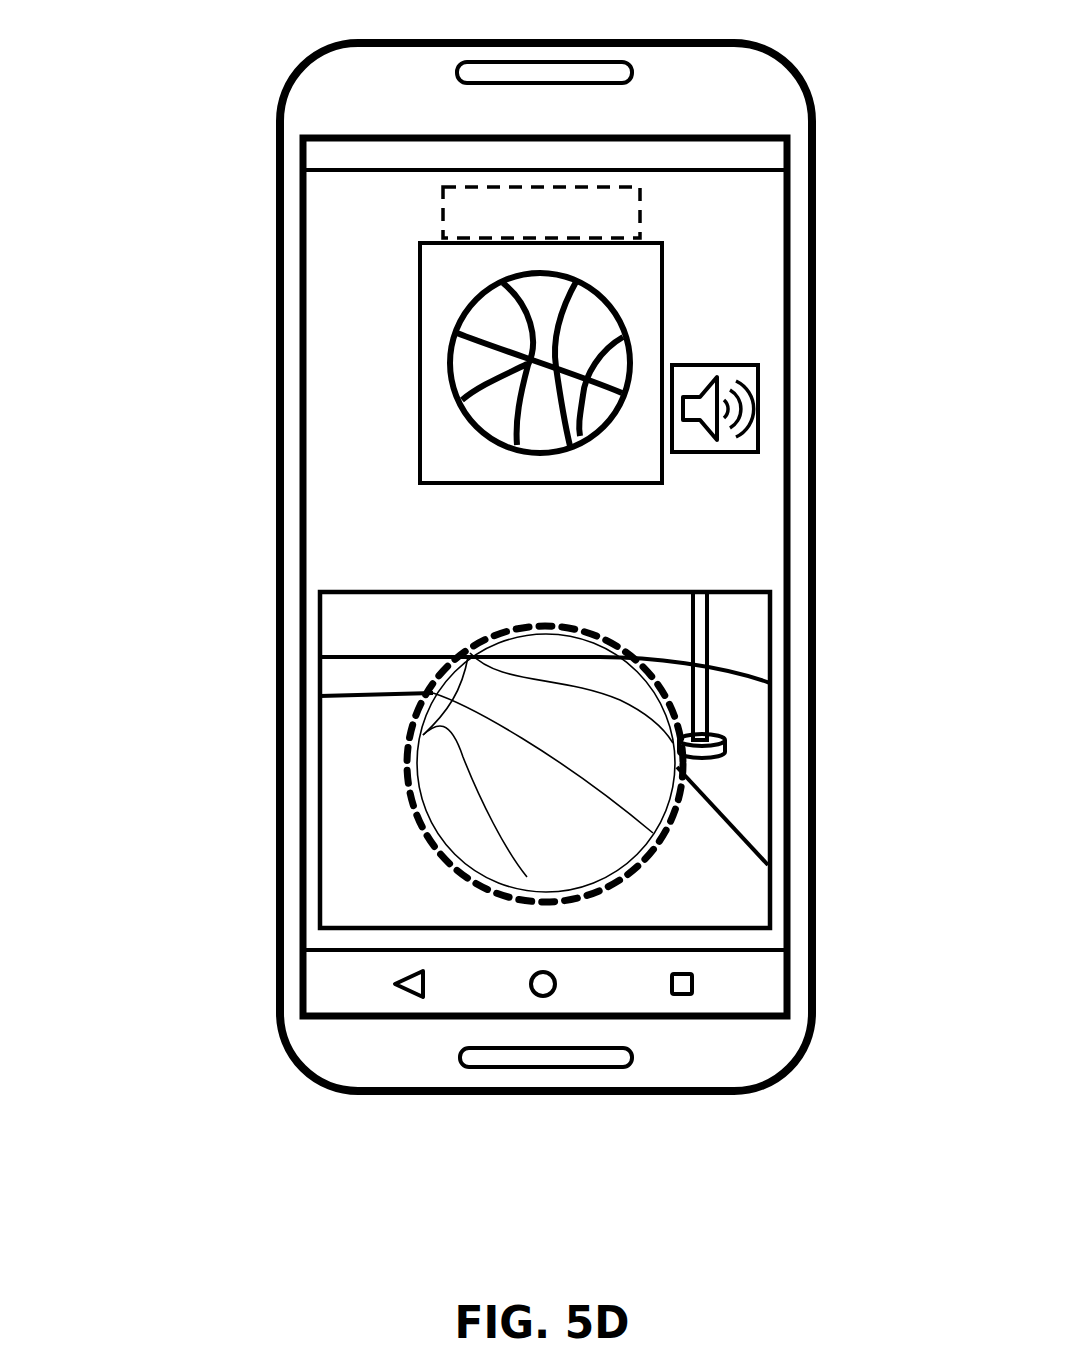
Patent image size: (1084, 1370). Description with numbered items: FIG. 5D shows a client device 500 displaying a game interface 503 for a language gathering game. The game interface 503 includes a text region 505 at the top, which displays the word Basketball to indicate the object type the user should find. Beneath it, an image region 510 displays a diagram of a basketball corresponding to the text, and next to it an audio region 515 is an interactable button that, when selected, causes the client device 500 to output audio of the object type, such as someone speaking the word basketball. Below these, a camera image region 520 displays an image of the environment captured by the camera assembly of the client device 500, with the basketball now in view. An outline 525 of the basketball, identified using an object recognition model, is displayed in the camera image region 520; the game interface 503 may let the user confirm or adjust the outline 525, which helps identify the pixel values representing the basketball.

The client device 500 is at (280, 115).
The game interface 503 is at (393, 579).
The text region 505 is at (443, 208).
The image region 510 is at (418, 360).
The audio region 515 is at (760, 402).
The camera image region 520 is at (320, 627).
The outline 525 is at (412, 815).